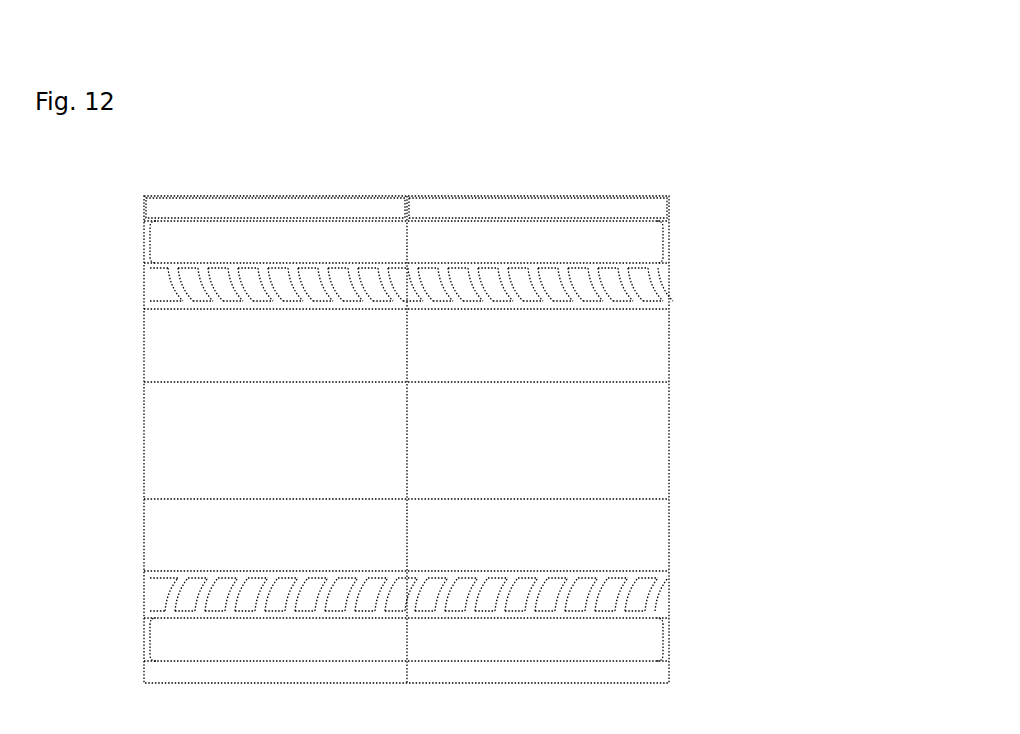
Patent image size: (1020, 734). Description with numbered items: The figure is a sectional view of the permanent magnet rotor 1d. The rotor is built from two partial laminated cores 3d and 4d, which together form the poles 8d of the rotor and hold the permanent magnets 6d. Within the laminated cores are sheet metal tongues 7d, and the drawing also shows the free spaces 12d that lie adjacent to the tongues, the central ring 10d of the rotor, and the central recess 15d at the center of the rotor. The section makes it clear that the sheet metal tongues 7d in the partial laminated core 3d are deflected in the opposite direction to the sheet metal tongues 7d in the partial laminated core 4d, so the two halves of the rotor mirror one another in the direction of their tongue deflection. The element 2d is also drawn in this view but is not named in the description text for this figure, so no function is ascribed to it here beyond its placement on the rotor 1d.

The permanent magnet rotor 1d is at (773, 124).
The housing 2d is at (669, 196).
The partial laminated core 3d is at (229, 196).
The partial laminated core 4d is at (623, 195).
The permanent magnet 6d is at (303, 250).
The sheet metal tongue 7d is at (637, 290).
The pole 8d is at (524, 208).
The central ring 10d is at (650, 348).
The free space 12d is at (286, 300).
The central recess 15d is at (650, 450).